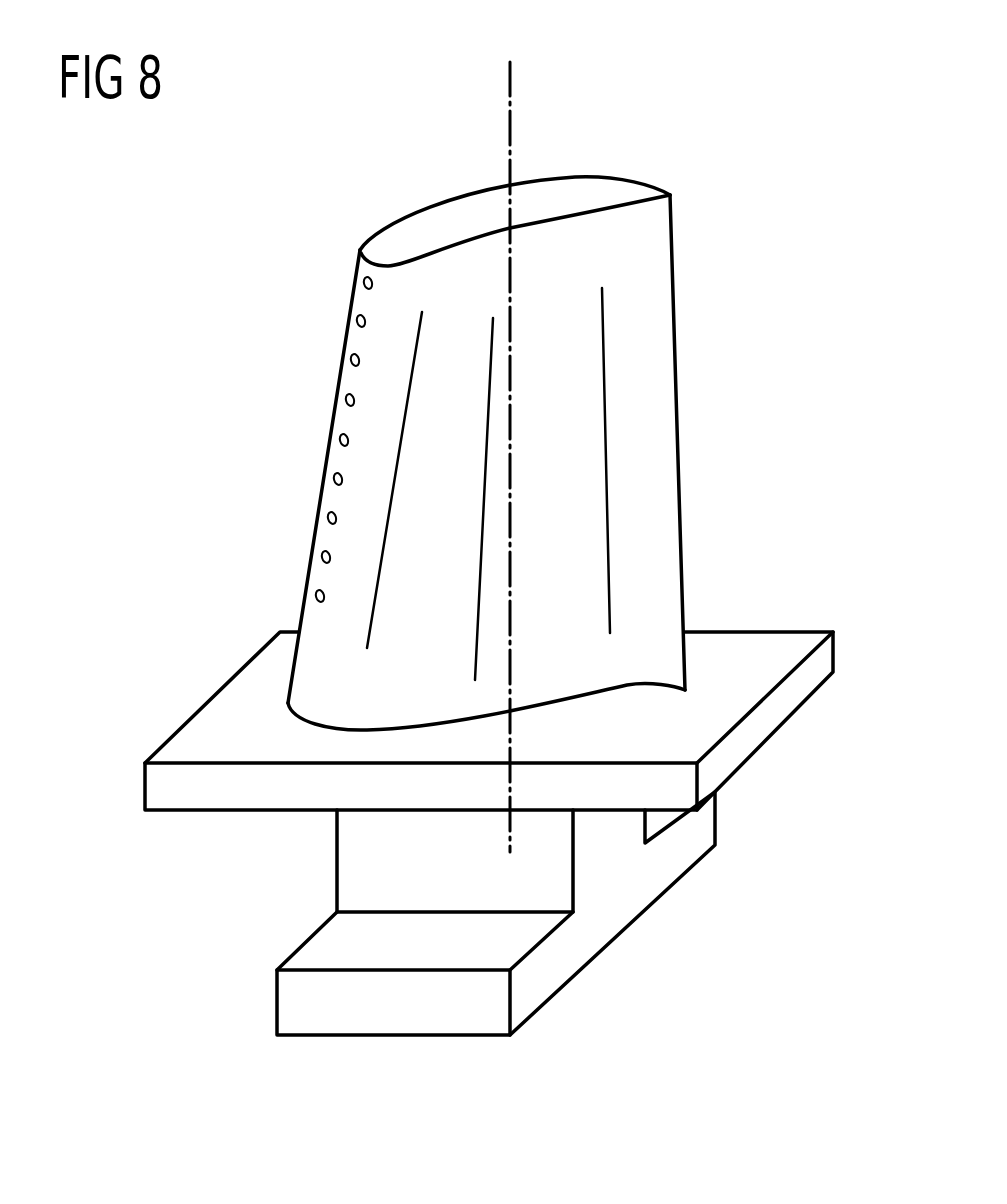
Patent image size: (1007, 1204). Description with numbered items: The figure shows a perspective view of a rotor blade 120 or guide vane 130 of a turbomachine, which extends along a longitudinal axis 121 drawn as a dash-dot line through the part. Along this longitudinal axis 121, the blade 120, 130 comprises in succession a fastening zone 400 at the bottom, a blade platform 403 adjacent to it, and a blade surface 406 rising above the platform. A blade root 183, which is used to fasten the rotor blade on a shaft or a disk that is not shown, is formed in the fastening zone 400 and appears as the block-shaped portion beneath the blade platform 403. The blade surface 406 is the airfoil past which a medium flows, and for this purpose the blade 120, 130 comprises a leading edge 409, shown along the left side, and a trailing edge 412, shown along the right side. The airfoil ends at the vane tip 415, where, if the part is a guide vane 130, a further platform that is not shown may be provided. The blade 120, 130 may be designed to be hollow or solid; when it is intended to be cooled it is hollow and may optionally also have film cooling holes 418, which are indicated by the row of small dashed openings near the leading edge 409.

The rotor blade 120 is at (418, 433).
The guide vane 130 is at (497, 433).
The longitudinal axis 121 is at (512, 88).
The blade root 183 is at (323, 948).
The fastening zone 400 is at (482, 913).
The blade platform 403 is at (777, 710).
The blade surface 406 is at (357, 503).
The leading edge 409 is at (338, 375).
The trailing edge 412 is at (678, 407).
The vane tip 415 is at (430, 222).
The film cooling holes 418 is at (363, 284).